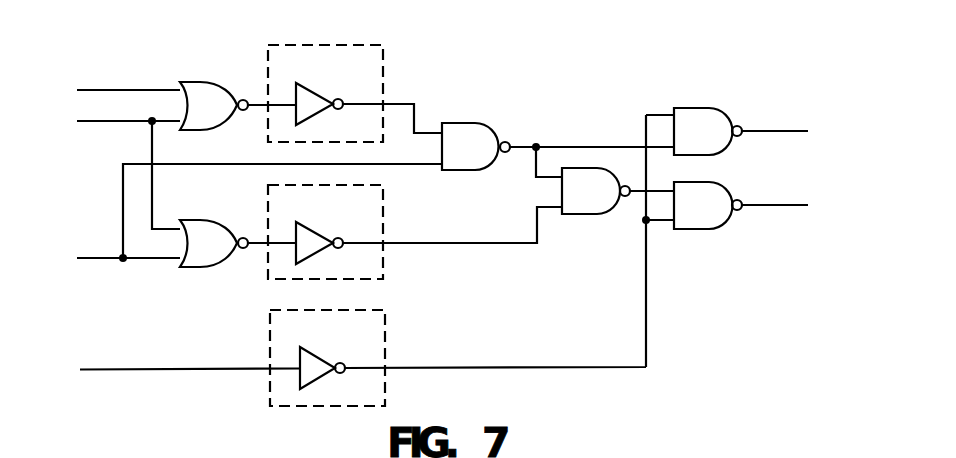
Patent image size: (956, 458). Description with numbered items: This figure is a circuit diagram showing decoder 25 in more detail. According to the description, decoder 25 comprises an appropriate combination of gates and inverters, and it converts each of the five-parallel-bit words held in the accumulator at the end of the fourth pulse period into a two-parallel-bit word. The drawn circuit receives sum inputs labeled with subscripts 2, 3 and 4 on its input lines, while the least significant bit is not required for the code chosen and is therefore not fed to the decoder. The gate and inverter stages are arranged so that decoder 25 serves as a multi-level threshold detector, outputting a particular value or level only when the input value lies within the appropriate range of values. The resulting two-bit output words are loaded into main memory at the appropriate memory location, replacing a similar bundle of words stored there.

The decoder 25 is at (172, 56).
The sum input Σ 2 is at (128, 75).
The sum input Σ 3 is at (128, 158).
The sum input Σ 4 is at (259, 213).